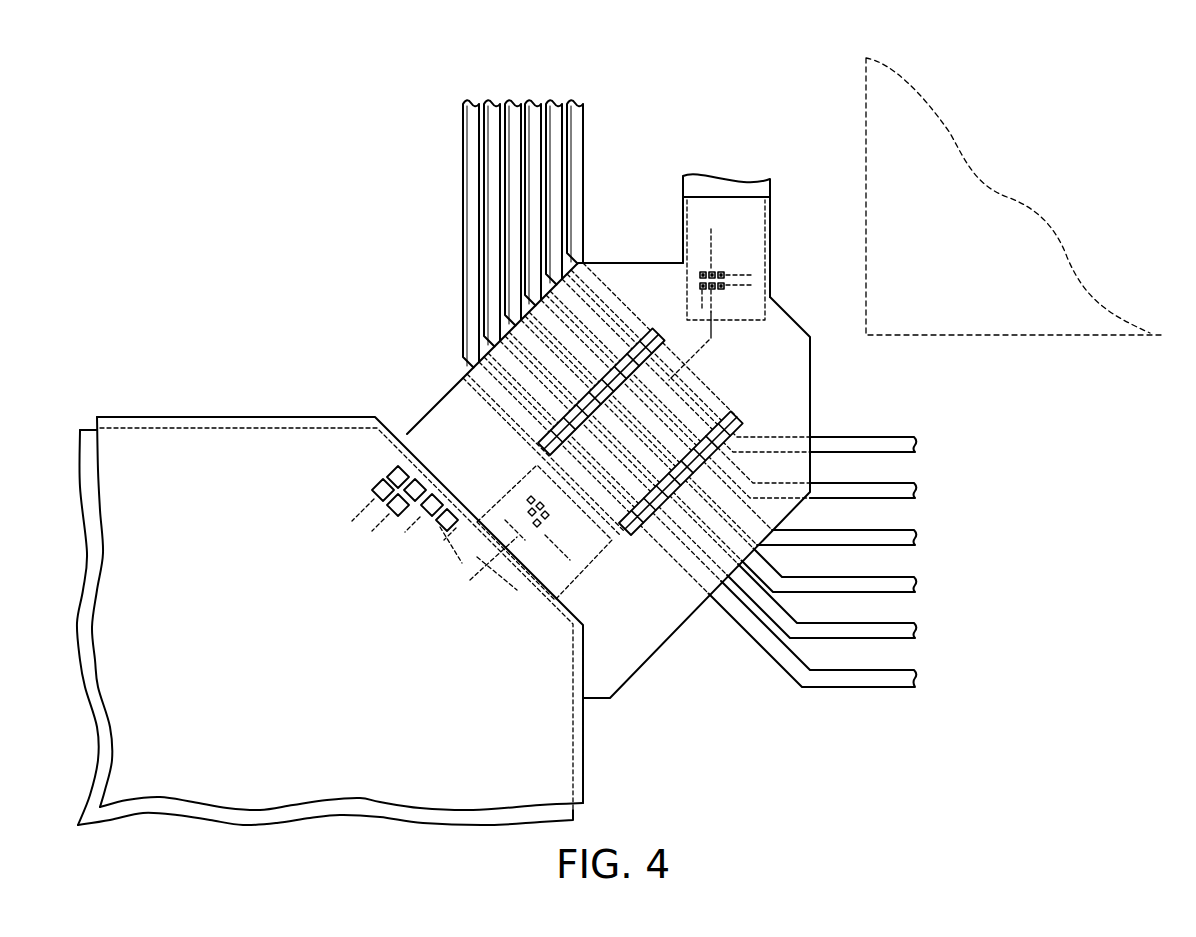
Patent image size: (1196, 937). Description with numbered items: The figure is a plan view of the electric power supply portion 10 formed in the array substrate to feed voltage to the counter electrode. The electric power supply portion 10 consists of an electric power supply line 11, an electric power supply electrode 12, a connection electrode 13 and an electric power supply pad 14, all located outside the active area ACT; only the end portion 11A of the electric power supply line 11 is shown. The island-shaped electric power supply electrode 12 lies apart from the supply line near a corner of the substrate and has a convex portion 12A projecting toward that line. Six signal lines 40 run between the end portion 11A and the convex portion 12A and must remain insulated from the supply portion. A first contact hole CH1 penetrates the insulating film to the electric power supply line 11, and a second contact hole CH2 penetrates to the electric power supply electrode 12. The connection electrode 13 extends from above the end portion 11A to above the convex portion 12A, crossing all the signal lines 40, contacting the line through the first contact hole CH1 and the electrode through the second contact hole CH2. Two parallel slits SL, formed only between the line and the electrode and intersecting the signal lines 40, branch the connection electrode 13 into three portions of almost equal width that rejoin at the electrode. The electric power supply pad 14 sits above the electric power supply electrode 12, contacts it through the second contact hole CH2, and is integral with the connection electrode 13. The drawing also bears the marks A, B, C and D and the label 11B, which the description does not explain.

The electric power supply portion 10 is at (674, 689).
The electric power supply line 11 is at (772, 186).
The end portion of the electric power supply line 11A is at (728, 322).
The flexible cables 11B is at (523, 233).
The electric power supply electrode 12 is at (578, 812).
The convex portion 12A is at (589, 572).
The connection electrode 13 is at (812, 386).
The electric power supply pad 14 is at (586, 779).
The signal lines 40 is at (930, 437).
The active area ACT is at (971, 169).
The first contact hole CH1 is at (697, 274).
The second contact hole CH2 is at (397, 468).
The slit SL is at (658, 333).
The cross-section point A is at (710, 217).
The cross-section point B is at (482, 569).
The cross-section point C is at (665, 307).
The cross-section point D is at (518, 453).